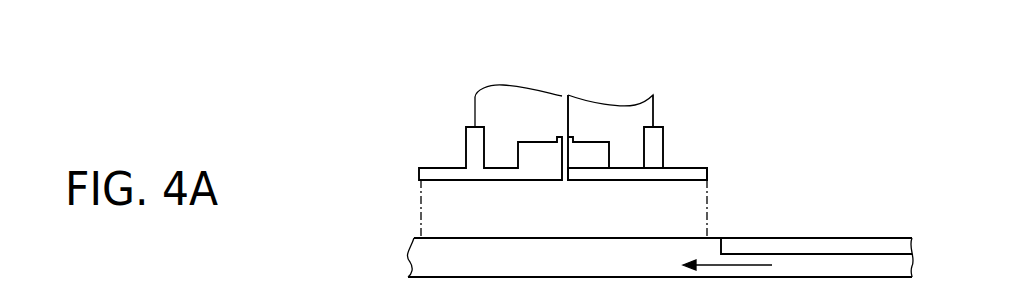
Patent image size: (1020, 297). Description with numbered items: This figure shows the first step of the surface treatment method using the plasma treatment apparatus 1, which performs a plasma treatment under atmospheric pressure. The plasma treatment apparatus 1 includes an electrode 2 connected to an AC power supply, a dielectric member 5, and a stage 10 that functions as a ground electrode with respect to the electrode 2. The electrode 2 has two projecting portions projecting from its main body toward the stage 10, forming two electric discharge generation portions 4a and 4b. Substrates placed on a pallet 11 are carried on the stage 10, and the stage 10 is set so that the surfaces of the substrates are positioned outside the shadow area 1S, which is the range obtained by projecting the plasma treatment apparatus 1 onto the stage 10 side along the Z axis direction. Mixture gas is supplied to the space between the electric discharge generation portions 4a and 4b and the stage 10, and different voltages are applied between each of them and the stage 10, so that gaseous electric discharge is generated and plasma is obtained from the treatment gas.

The plasma treatment apparatus 1 is at (645, 60).
The shadow area 1S is at (422, 192).
The electrode 2 is at (648, 108).
The electric discharge generation portion 4a is at (503, 180).
The electric discharge generation portion 4b is at (630, 180).
The dielectric member 5 is at (707, 173).
The stage 10 is at (880, 270).
The pallet 11 is at (827, 245).